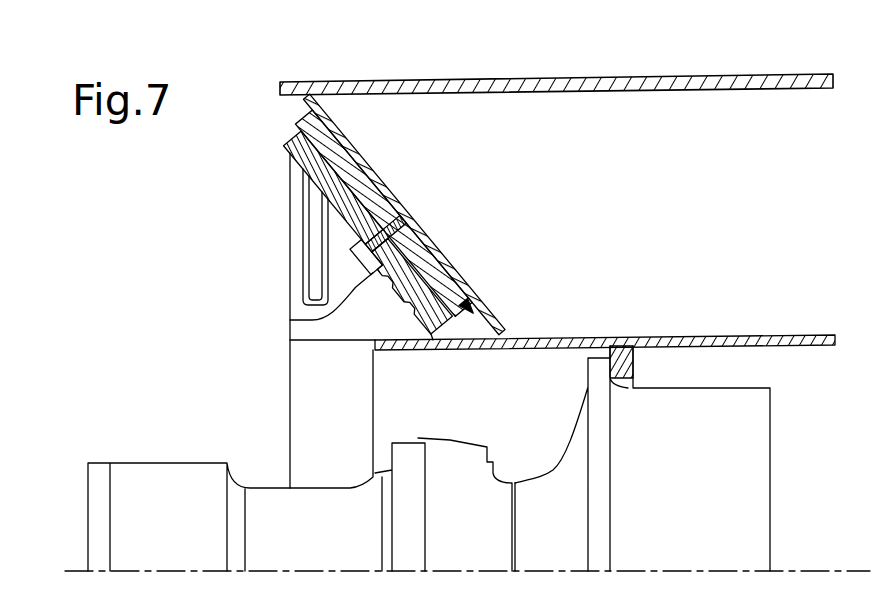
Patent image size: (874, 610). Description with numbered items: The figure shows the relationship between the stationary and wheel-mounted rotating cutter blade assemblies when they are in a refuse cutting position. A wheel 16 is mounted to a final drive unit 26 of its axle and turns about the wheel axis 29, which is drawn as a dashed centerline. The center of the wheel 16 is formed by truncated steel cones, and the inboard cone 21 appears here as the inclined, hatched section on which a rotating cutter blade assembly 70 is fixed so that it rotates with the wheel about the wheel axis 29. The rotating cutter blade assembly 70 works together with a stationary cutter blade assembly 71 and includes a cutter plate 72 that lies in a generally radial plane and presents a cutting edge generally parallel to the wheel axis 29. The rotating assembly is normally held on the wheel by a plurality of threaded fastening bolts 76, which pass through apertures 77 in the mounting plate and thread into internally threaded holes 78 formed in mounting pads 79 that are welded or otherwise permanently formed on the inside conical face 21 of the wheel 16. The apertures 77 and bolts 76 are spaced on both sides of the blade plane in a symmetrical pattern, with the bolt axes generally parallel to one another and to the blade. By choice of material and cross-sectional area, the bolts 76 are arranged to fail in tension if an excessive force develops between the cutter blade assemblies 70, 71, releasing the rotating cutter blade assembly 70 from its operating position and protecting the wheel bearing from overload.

The wheel 16 is at (527, 74).
The inboard center cone 21 is at (336, 134).
The final drive unit 26 is at (733, 471).
The wheel axis 29 is at (73, 571).
The rotating cutter blade assembly 70 is at (276, 207).
The stationary cutter blade assembly 71 is at (316, 381).
The cutter plate 72 is at (301, 281).
The threaded fastening bolt 76 is at (290, 320).
The aperture 77 is at (380, 243).
The internally threaded hole 78 is at (378, 247).
The mounting pad 79 is at (440, 286).